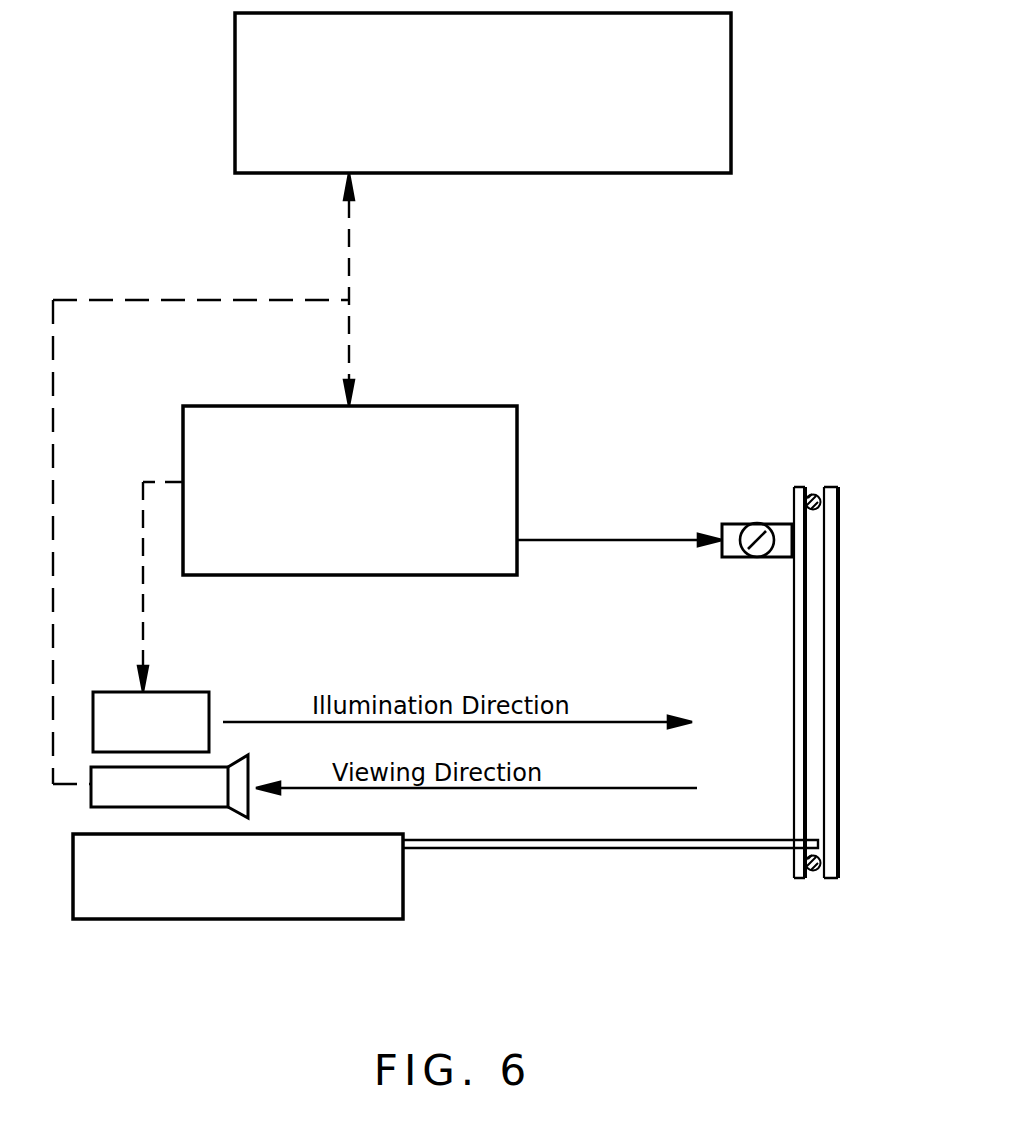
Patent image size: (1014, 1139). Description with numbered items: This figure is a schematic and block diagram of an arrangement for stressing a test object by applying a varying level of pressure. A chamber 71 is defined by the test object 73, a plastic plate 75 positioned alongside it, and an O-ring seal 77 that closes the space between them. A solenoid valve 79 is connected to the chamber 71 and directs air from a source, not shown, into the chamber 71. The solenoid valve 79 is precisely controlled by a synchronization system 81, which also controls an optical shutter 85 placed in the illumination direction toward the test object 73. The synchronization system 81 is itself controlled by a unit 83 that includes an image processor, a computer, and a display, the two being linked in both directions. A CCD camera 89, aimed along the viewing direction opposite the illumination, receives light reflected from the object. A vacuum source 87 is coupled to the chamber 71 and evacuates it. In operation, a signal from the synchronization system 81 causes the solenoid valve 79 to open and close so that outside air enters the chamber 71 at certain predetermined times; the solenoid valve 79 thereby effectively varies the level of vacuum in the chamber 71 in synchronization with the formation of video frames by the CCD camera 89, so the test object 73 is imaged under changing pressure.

The chamber 71 is at (818, 678).
The test object 73 is at (838, 485).
The plastic plate 75 is at (794, 650).
The O-ring seal 77 is at (812, 494).
The solenoid valve 79 is at (722, 522).
The synchronization system 81 is at (495, 405).
The unit 83 is at (731, 173).
The optical shutter 85 is at (122, 690).
The vacuum source 87 is at (390, 920).
The CCD camera 89 is at (100, 795).